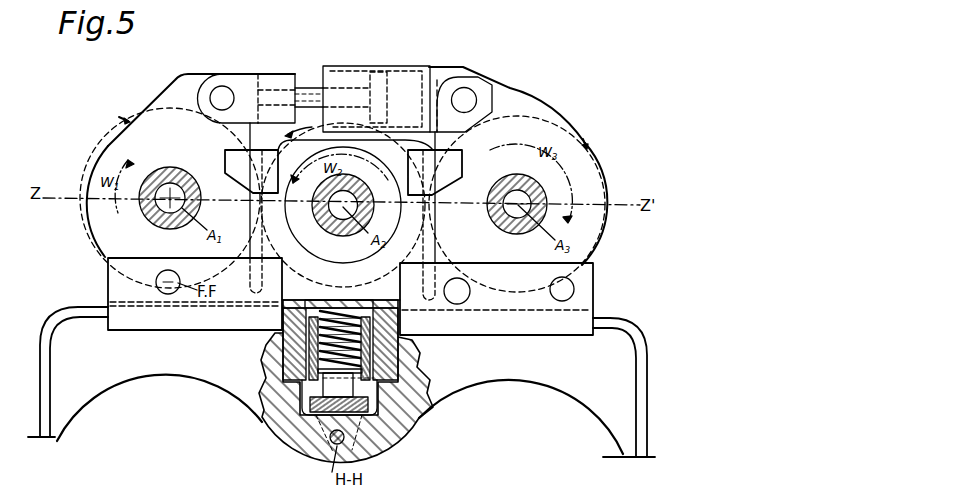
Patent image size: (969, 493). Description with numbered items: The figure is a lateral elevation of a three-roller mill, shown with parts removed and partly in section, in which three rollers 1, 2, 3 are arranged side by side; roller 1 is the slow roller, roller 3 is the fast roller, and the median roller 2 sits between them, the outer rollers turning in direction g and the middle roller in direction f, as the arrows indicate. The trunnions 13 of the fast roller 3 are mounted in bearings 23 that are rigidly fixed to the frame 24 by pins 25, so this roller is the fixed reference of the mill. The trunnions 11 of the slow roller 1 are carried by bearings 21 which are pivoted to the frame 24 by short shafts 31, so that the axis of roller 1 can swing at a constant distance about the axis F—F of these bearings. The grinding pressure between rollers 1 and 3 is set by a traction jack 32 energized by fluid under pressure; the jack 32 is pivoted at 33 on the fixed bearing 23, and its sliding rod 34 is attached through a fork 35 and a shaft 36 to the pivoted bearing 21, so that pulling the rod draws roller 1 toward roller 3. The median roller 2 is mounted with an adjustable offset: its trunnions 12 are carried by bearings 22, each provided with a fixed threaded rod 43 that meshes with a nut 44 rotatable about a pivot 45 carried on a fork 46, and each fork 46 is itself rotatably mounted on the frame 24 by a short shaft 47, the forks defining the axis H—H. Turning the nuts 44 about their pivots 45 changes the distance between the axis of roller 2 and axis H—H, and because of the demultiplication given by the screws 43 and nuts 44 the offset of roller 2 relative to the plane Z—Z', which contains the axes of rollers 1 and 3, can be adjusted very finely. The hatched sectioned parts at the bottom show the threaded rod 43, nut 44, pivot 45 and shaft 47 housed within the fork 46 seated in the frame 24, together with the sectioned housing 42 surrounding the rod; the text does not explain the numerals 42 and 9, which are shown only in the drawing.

The slow roller 1 is at (103, 138).
The median roller 2 is at (313, 136).
The fast roller 3 is at (605, 203).
The direction arrow 9 is at (347, 128).
The trunnions of roller 1 11 is at (163, 185).
The trunnions of roller 2 12 is at (342, 207).
The trunnions of roller 3 13 is at (522, 197).
The pivoted bearing 21 is at (102, 218).
The bearing of median roller 22 is at (263, 258).
The fixed bearing 23 is at (517, 103).
The frame 24 is at (78, 345).
The pins 25 is at (457, 293).
The short shaft 31 is at (166, 282).
The traction jack 32 is at (393, 66).
The jack pivot 33 is at (467, 91).
The sliding rod 34 is at (315, 90).
The fork 35 is at (268, 75).
The shaft 36 is at (219, 88).
The spring cup 42 is at (290, 302).
The fixed threaded rod 43 is at (316, 315).
The nut 44 is at (372, 375).
The pivot 45 is at (385, 410).
The fork 46 is at (290, 425).
The short shaft 47 is at (360, 447).